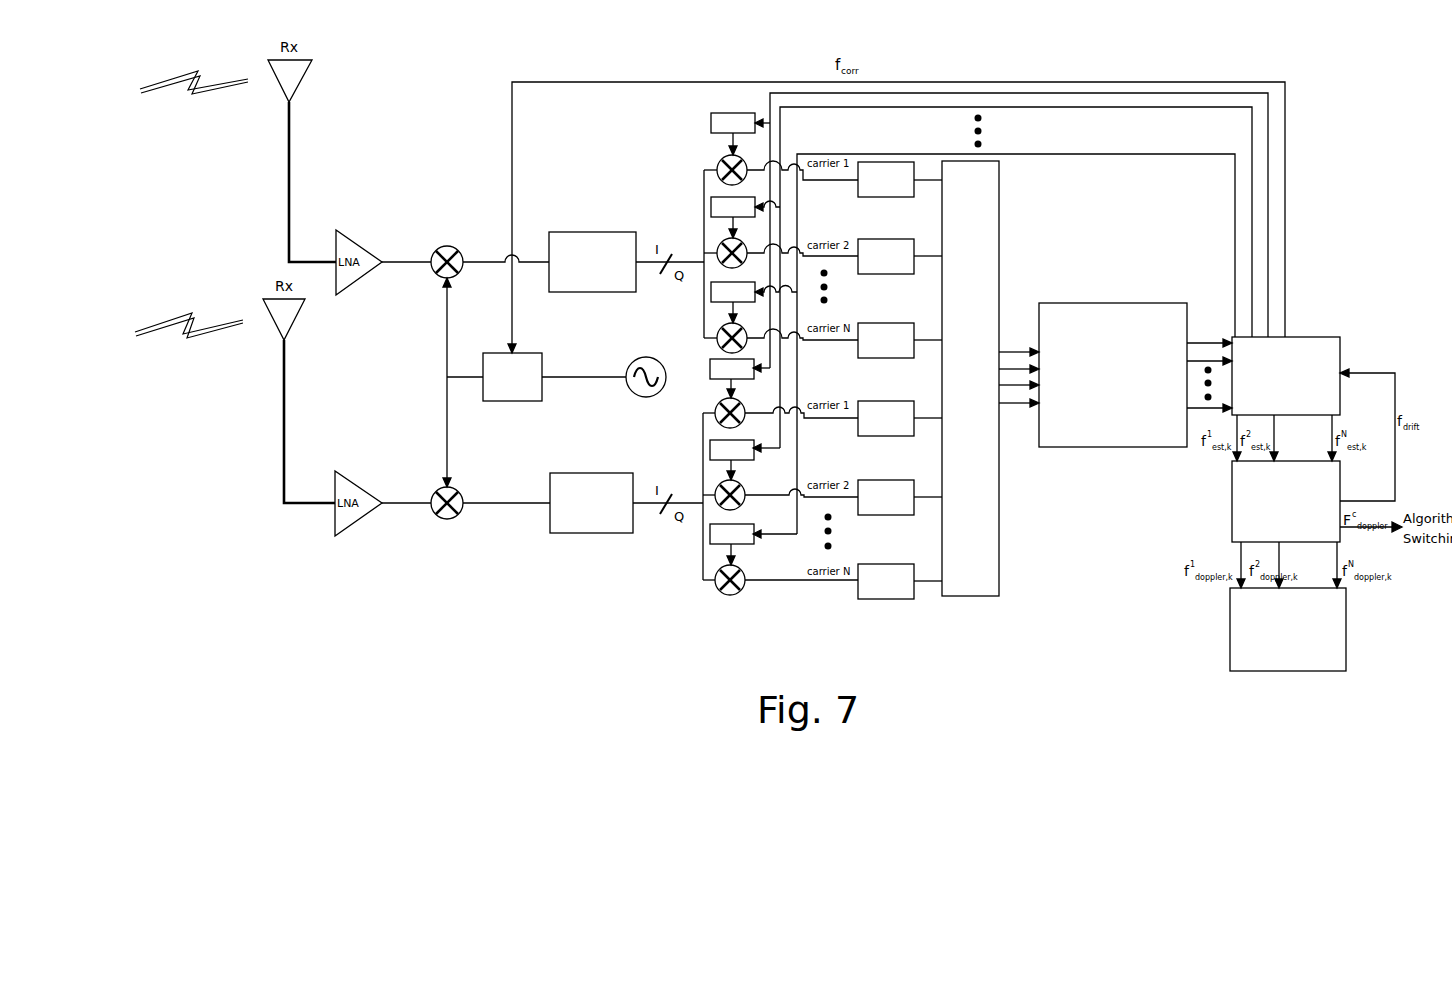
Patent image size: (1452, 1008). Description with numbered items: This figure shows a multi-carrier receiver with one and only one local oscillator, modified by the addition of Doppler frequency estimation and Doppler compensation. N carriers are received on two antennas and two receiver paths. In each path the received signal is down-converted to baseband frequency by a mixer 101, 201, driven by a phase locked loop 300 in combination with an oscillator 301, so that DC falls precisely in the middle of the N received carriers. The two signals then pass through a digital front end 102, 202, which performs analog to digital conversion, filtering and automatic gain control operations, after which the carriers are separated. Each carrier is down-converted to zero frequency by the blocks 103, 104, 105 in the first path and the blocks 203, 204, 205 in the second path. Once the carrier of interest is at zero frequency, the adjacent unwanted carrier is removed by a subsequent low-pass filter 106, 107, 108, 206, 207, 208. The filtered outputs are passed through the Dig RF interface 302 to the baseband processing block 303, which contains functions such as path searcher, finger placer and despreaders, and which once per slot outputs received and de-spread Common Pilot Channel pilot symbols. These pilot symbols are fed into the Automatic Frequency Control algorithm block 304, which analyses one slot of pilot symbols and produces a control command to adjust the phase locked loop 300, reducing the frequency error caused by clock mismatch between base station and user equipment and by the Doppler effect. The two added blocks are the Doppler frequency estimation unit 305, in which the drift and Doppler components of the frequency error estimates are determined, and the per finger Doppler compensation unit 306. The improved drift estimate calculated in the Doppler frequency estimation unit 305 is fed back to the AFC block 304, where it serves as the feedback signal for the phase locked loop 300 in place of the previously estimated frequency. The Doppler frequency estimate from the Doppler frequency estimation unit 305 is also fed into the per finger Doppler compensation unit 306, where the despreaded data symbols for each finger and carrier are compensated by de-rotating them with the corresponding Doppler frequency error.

The mixer 101 is at (447, 254).
The digital front end (DFE) 102 is at (592, 262).
The down-conversion block 103 is at (716, 149).
The down-conversion block 104 is at (716, 232).
The down-conversion block 105 is at (716, 317).
The low-pass filter 106 is at (886, 171).
The low-pass filter 107 is at (886, 247).
The low-pass filter 108 is at (886, 331).
The mixer 201 is at (447, 514).
The digital front end (DFE) 202 is at (591, 503).
The down-conversion block 203 is at (714, 393).
The down-conversion block 204 is at (714, 475).
The down-conversion block 205 is at (714, 559).
The low-pass filter 206 is at (886, 408).
The low-pass filter 207 is at (886, 487).
The low-pass filter 208 is at (886, 571).
The phase locked loop 300 is at (512, 377).
The oscillator 301 is at (646, 378).
The Dig RF interface 302 is at (970, 378).
The baseband processing block 303 is at (1113, 375).
The Automatic Frequency Control (AFC) algorithm block 304 is at (1286, 376).
The Doppler frequency estimation unit 305 is at (1286, 501).
The per finger Doppler compensation unit 306 is at (1288, 629).